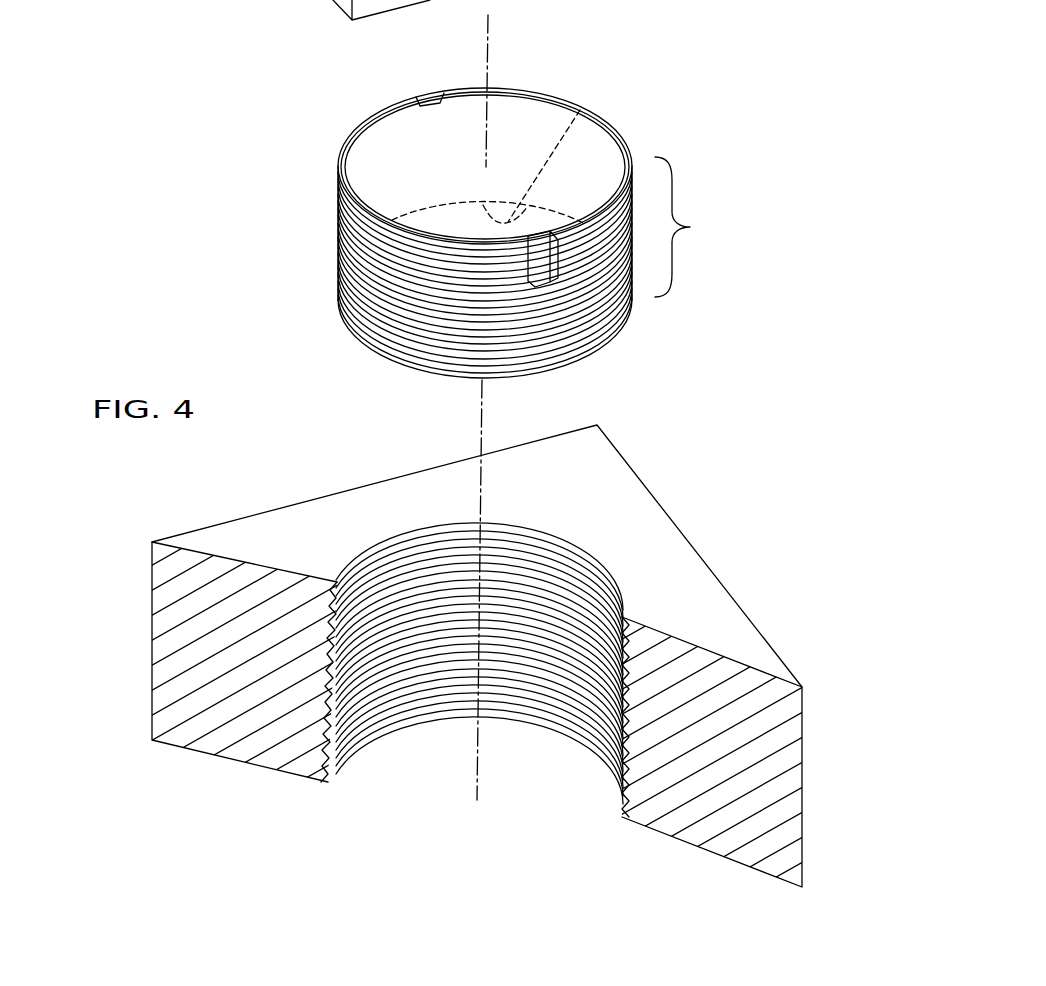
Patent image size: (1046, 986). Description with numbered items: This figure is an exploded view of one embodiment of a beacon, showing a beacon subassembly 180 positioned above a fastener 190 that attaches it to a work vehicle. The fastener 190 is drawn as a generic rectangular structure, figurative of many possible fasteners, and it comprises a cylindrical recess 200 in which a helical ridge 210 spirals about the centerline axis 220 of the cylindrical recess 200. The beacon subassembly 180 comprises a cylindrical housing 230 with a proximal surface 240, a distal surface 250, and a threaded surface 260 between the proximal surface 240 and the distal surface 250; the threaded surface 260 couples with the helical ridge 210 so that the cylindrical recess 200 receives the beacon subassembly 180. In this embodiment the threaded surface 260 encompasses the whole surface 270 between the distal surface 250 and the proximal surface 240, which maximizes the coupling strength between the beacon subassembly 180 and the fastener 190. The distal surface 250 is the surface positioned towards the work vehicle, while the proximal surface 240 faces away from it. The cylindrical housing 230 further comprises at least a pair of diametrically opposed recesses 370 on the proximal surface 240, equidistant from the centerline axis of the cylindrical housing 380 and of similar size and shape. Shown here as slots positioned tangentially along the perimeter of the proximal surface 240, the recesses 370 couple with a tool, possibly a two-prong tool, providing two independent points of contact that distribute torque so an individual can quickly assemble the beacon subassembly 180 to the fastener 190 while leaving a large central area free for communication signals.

The beacon subassembly 180 is at (597, 44).
The fastener 190 is at (679, 427).
The cylindrical recess 200 is at (417, 575).
The helical ridge 210 is at (620, 750).
The centerline axis 220 is at (473, 437).
The cylindrical housing 230 is at (338, 225).
The proximal surface 240 is at (432, 153).
The distal surface 250 is at (580, 110).
The threaded surface 260 is at (340, 243).
The surface between the distal surface and the proximal surface 270 is at (702, 227).
The diametrically opposed recesses 370 is at (428, 97).
The centerline axis of the cylindrical housing 380 is at (502, 50).